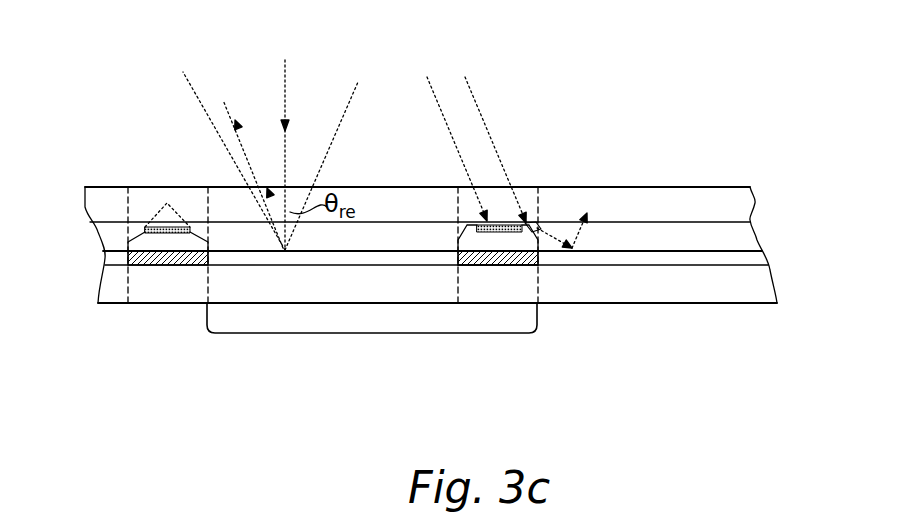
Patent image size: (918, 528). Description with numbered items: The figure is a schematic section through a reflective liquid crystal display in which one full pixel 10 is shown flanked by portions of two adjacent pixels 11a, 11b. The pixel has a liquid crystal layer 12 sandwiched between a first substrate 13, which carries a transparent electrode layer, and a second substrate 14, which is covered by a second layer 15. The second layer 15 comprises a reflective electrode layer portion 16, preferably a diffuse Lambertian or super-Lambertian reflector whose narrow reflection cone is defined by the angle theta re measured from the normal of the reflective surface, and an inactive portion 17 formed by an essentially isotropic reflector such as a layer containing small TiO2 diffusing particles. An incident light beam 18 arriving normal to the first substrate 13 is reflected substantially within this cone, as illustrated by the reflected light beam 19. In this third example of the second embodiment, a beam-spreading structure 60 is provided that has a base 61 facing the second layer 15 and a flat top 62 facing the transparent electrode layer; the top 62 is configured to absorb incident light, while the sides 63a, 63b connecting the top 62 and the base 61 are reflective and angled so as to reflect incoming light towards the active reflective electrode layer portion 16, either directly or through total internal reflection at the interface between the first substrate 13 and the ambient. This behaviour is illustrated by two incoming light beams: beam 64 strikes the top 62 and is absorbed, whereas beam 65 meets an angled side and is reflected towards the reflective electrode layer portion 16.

The pixel 10 is at (362, 333).
The adjacent pixel 11a is at (132, 318).
The adjacent pixel 11b is at (634, 312).
The liquid crystal layer 12 is at (223, 235).
The first substrate 13 is at (225, 198).
The second substrate 14 is at (240, 288).
The second layer 15 is at (768, 258).
The reflective electrode layer portion 16 is at (287, 257).
The inactive portion 17 is at (505, 258).
The incident light beam 18 is at (285, 90).
The reflected light beam 19 is at (225, 102).
The beam-spreading structure 60 is at (537, 224).
The base 61 is at (480, 266).
The top 62 is at (498, 217).
The side 63a is at (467, 222).
The side 63b is at (543, 228).
The incoming light beam 64 is at (448, 115).
The incoming light beam 65 is at (478, 100).